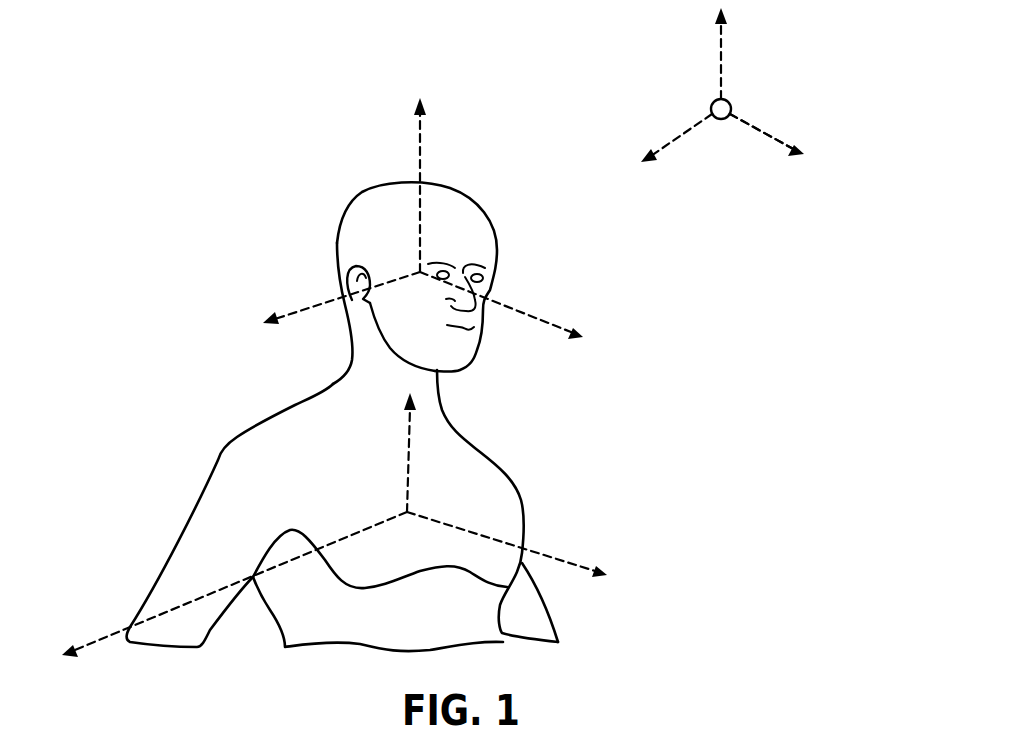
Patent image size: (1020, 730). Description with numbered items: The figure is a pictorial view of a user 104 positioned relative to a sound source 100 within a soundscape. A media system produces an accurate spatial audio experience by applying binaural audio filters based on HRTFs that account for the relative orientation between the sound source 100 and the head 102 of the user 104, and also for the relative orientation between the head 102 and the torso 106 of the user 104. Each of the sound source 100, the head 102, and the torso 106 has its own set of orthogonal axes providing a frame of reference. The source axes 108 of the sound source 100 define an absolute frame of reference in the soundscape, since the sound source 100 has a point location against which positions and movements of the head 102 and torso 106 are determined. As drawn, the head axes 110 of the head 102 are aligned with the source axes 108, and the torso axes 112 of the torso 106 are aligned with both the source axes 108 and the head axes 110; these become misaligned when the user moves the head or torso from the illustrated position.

The sound source 100 is at (731, 99).
The head 102 is at (434, 241).
The user 104 is at (495, 448).
The torso 106 is at (225, 467).
The source axes 108 is at (756, 132).
The head axes 110 is at (535, 318).
The torso axes 112 is at (562, 560).